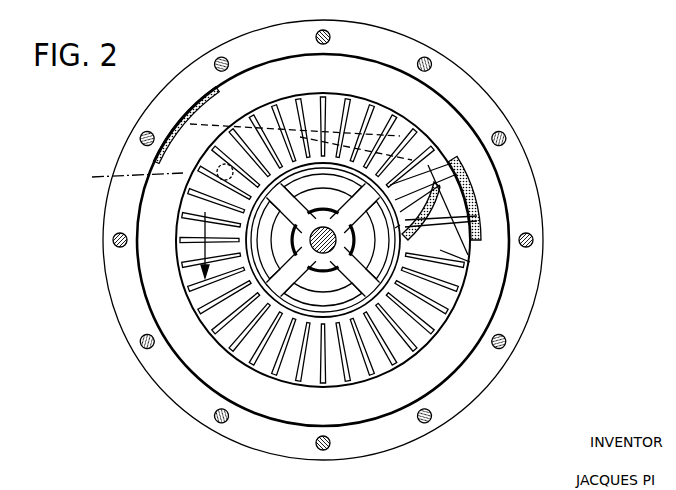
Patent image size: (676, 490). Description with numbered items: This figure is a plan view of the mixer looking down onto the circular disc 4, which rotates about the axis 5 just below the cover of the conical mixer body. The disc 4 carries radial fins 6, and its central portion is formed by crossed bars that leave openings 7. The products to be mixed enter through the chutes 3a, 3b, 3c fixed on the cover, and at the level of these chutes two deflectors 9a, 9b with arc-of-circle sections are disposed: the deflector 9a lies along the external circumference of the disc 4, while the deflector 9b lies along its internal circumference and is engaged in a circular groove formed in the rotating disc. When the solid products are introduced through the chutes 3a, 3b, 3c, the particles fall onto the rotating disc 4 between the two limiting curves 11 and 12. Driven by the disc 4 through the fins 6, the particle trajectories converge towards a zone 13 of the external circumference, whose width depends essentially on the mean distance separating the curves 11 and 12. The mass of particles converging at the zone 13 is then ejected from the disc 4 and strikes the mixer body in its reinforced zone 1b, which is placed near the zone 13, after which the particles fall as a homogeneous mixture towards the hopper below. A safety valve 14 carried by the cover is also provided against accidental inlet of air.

The reinforced zone 1b is at (183, 133).
The chute 3a is at (455, 285).
The chute 3b is at (462, 248).
The chute 3c is at (428, 166).
The circular disc 4 is at (330, 93).
The axis 5 is at (310, 240).
The radial fin 6 is at (365, 93).
The openings 7 is at (356, 222).
The deflector 9a is at (430, 212).
The deflector 9b is at (396, 228).
The limiting curve 11 is at (425, 190).
The limiting curve 12 is at (433, 219).
The zone 13 is at (236, 125).
The safety valve 14 is at (147, 178).